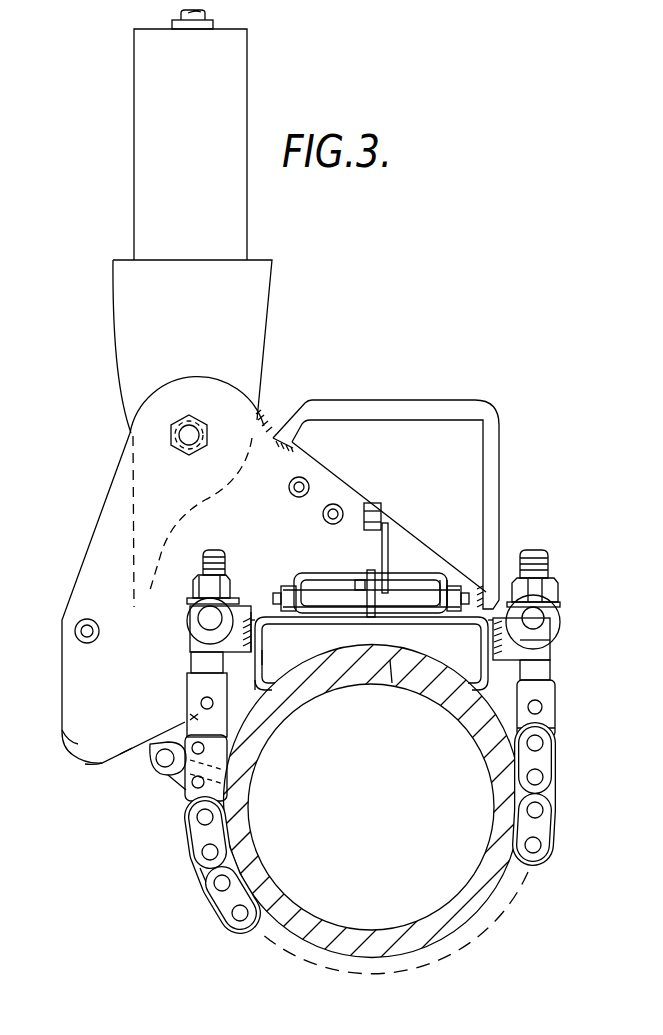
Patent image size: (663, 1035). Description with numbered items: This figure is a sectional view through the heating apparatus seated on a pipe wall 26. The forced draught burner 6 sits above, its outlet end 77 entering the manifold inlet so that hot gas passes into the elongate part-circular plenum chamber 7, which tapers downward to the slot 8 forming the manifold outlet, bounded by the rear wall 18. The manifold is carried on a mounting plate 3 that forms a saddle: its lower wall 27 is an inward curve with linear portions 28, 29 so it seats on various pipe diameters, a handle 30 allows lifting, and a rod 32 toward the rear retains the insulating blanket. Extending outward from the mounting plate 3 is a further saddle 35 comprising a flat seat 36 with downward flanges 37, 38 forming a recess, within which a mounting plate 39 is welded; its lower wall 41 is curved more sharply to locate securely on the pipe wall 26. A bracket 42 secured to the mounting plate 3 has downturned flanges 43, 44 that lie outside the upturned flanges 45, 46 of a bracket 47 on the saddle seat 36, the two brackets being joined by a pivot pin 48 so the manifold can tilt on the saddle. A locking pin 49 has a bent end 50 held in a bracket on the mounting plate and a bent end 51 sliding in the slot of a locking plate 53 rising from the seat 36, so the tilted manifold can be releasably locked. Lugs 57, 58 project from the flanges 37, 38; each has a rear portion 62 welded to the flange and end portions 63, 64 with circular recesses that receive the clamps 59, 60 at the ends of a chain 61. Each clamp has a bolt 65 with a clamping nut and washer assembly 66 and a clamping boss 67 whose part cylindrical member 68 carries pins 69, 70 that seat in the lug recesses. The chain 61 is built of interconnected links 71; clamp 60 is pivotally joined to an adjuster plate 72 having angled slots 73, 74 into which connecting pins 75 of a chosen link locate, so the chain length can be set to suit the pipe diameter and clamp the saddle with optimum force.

The forced draught burner 6 is at (200, 79).
The outlet end 77 is at (257, 258).
The plenum chamber 7 is at (233, 414).
The slot 8 is at (133, 597).
The rear wall 18 is at (133, 463).
The mounting plate 3 is at (62, 733).
The adjuster plate 72 is at (182, 722).
The lower wall 27 is at (102, 766).
The linear portion 28 is at (124, 759).
The rod 32 is at (75, 628).
The slot 73 is at (153, 756).
The slot 74 is at (183, 778).
The handle 30 is at (470, 400).
The pin end 50 is at (364, 508).
The locking pin 49 is at (385, 522).
The bracket 42 is at (402, 570).
The upturned flange 45 is at (428, 585).
The downturned flange 44 is at (450, 584).
The bracket 47 is at (357, 645).
The upturned flange 46 is at (300, 612).
The locking plate 53 is at (320, 574).
The pivot pin 48 is at (395, 598).
The pin end 51 is at (357, 586).
The seat 36 is at (470, 627).
The lower wall 41 is at (390, 660).
The mounting plate 39 is at (262, 667).
The flange 38 is at (254, 692).
The pipe wall 26 is at (508, 882).
The bolt 65 is at (222, 550).
The clamping nut and washer assembly 66 is at (195, 583).
The clamp 60 is at (187, 601).
The clamp 59 is at (560, 586).
The part cylindrical member 68 is at (198, 614).
The pin 70 is at (188, 630).
The clamping boss 67 is at (196, 648).
The lug 58 is at (200, 667).
The end portion 64 is at (205, 690).
The downturned flange 43 is at (247, 610).
The rear portion 62 is at (245, 620).
The lug 57 is at (566, 625).
The pin 69 is at (561, 632).
The end portion 63 is at (556, 642).
The saddle 35 is at (551, 664).
The flange 37 is at (555, 693).
The linear portion 29 is at (556, 731).
The connecting pin 75 is at (203, 752).
The link 71 is at (228, 816).
The chain 61 is at (200, 868).